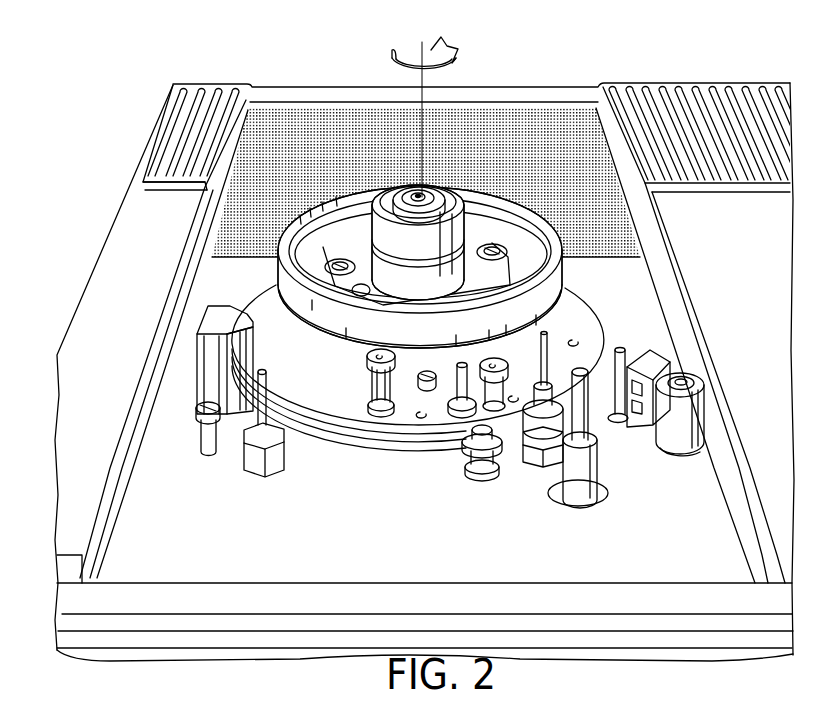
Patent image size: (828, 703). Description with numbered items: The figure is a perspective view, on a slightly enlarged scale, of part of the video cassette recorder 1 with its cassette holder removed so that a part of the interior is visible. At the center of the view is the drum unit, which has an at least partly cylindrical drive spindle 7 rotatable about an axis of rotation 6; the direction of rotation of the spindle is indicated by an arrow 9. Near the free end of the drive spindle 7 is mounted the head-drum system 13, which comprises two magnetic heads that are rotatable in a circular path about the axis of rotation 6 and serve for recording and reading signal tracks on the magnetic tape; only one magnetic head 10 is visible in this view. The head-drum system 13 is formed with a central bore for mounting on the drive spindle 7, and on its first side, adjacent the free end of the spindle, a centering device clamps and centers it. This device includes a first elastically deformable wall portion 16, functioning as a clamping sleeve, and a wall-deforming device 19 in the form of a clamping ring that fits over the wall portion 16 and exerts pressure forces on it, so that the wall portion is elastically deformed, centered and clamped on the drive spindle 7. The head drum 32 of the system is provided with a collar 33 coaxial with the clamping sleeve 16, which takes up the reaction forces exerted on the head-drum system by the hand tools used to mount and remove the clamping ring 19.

The video cassette recorder 1 is at (147, 236).
The axis of rotation 6 is at (418, 66).
The drive spindle 7 is at (421, 197).
The arrow 9 is at (456, 72).
The magnetic head 10 is at (286, 298).
The head-drum system 13 is at (309, 196).
The elastically deformable wall portion 16 is at (399, 381).
The wall-deforming device 19 is at (383, 207).
The head drum 32 is at (541, 300).
The collar 33 is at (466, 236).